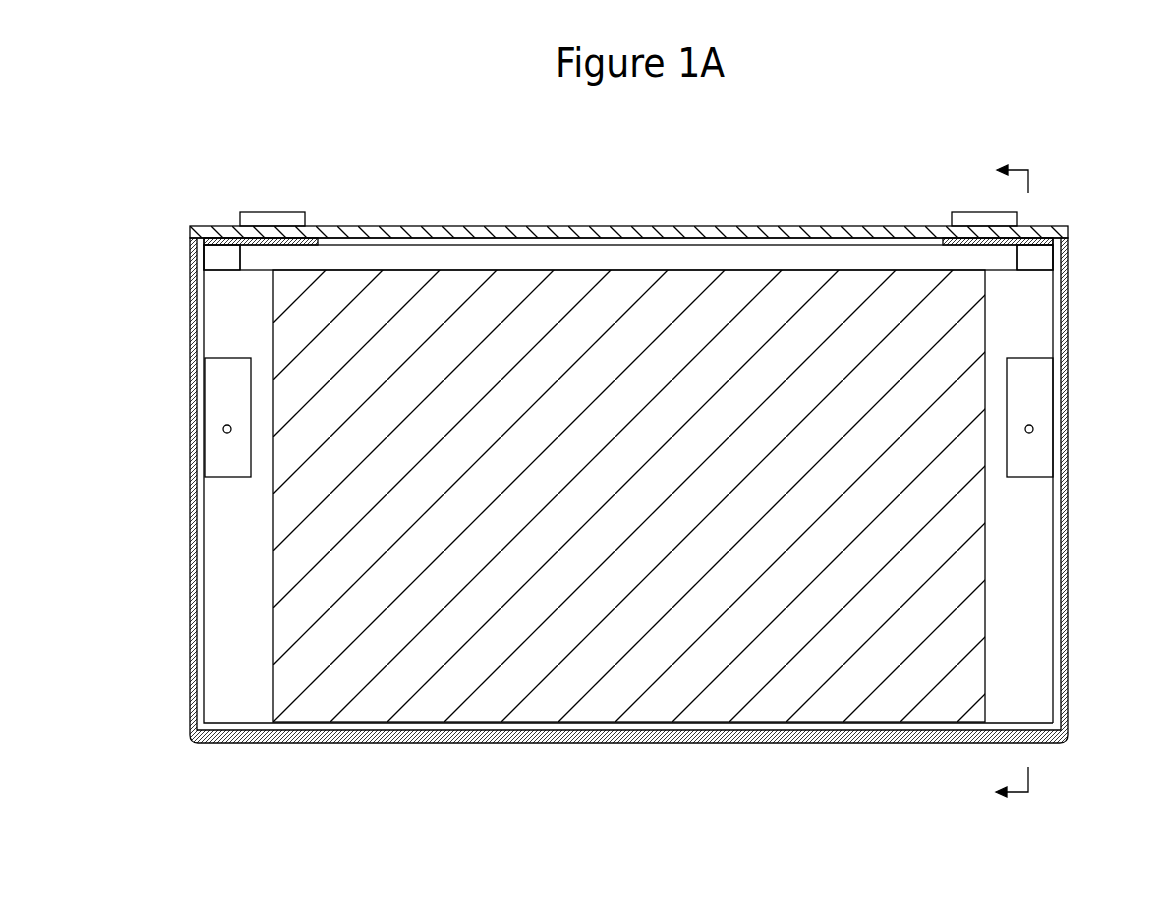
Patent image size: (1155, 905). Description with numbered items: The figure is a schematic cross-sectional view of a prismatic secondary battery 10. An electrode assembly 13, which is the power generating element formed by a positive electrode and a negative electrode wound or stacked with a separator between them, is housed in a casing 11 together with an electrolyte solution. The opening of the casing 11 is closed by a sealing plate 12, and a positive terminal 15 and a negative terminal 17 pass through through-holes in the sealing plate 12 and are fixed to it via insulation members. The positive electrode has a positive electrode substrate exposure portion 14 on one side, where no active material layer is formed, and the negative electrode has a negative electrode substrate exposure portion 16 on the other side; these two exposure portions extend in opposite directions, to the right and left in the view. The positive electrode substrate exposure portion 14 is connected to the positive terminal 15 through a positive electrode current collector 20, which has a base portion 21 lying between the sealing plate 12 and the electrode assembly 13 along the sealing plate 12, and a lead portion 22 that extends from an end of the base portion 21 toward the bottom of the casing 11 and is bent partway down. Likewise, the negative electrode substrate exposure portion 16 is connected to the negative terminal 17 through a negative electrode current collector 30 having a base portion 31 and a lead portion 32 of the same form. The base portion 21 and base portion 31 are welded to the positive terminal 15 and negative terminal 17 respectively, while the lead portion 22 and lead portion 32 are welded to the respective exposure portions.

The prismatic secondary battery 10 is at (818, 196).
The casing 11 is at (190, 588).
The sealing plate 12 is at (545, 226).
The electrode assembly 13 is at (767, 710).
The positive electrode substrate exposure portion 14 is at (1040, 586).
The positive terminal 15 is at (960, 212).
The negative electrode substrate exposure portion 16 is at (215, 660).
The negative terminal 17 is at (262, 212).
The positive electrode current collector 20 is at (1110, 240).
The base portion 21 is at (1043, 241).
The lead portion 22 is at (1043, 258).
The negative electrode current collector 30 is at (153, 240).
The base portion 31 is at (218, 242).
The lead portion 32 is at (213, 259).